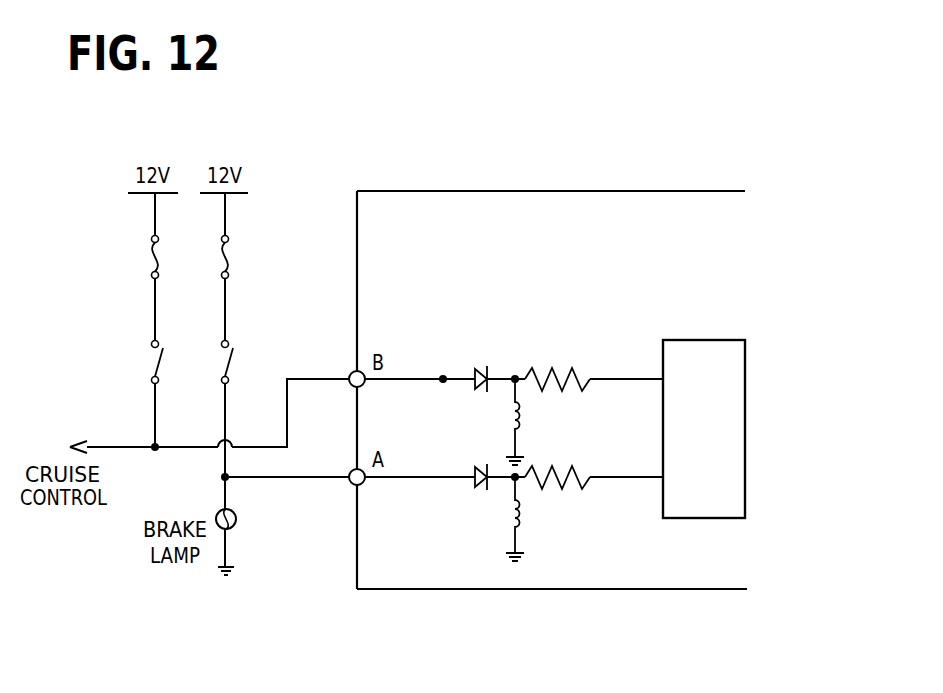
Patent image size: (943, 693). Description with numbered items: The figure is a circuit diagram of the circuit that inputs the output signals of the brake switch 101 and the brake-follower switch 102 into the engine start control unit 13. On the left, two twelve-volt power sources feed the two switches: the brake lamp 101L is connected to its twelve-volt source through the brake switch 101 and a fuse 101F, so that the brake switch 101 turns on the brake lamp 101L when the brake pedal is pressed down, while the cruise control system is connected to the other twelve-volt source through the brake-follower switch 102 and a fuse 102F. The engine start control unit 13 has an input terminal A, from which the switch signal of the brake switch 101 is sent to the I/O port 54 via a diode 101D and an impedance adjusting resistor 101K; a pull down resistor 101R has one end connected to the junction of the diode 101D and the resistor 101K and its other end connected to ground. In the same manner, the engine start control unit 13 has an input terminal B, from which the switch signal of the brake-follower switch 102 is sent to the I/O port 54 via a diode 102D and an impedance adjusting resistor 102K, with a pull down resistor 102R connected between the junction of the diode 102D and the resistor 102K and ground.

The engine start control unit 13 is at (690, 190).
The I/O port 54 is at (690, 340).
The brake switch 101 is at (233, 362).
The brake-follower switch 102 is at (163, 364).
The fuse 101F is at (230, 253).
The fuse 102F is at (160, 253).
The diode 101D is at (477, 468).
The diode 102D is at (477, 370).
The impedance adjusting resistor 101K is at (577, 467).
The impedance adjusting resistor 102K is at (577, 368).
The pull down resistor 101R is at (522, 510).
The pull down resistor 102R is at (522, 410).
The brake lamp 101L is at (236, 517).